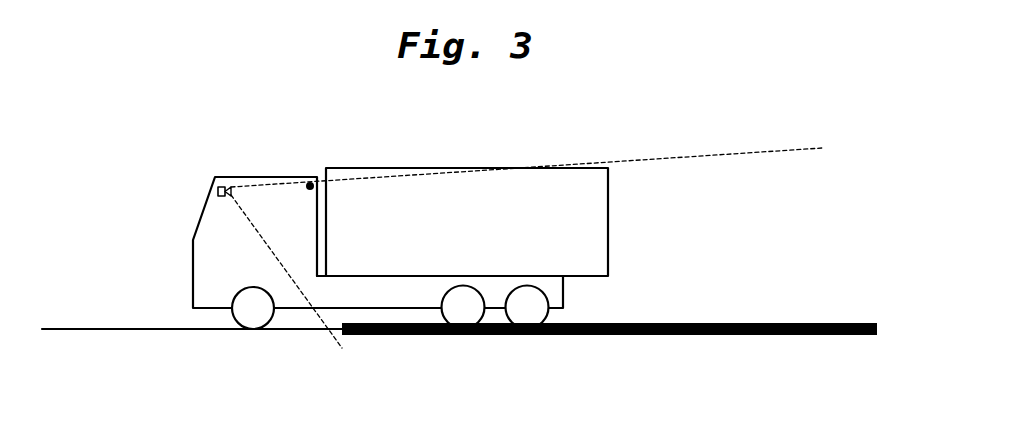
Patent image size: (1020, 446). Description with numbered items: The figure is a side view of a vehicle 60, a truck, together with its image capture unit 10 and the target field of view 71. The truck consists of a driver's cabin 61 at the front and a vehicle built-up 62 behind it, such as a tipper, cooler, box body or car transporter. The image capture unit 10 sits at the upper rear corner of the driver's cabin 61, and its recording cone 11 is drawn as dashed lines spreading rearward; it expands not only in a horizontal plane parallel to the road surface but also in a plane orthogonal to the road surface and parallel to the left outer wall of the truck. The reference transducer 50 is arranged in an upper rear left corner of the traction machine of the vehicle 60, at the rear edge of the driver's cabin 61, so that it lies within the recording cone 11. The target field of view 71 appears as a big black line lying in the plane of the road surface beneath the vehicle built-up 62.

The image capture unit 10 is at (215, 177).
The recording cone 11 is at (715, 210).
The reference transducer 50 is at (312, 182).
The vehicle 60 is at (160, 146).
The driver's cabin 61 is at (215, 212).
The vehicle built-up 62 is at (476, 210).
The target field of view 71 is at (548, 334).